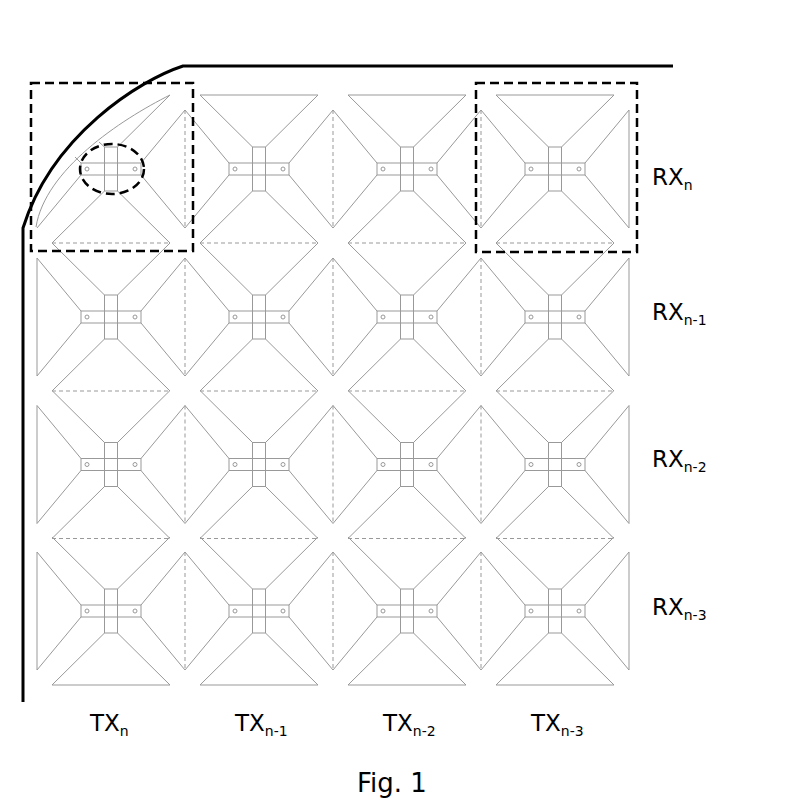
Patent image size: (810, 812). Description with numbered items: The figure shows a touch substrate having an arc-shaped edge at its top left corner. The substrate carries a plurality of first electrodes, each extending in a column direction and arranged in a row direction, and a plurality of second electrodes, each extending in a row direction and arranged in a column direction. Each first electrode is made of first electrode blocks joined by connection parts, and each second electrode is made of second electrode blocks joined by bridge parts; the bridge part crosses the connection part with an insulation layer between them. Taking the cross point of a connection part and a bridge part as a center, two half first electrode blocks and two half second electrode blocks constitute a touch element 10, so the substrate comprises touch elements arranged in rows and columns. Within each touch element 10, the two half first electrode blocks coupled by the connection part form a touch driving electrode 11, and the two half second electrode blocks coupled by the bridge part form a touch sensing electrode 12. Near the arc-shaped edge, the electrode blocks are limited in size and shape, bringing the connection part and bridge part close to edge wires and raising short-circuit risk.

The touch element 10 is at (638, 109).
The touch driving electrode 11 is at (555, 110).
The touch sensing electrode 12 is at (613, 183).